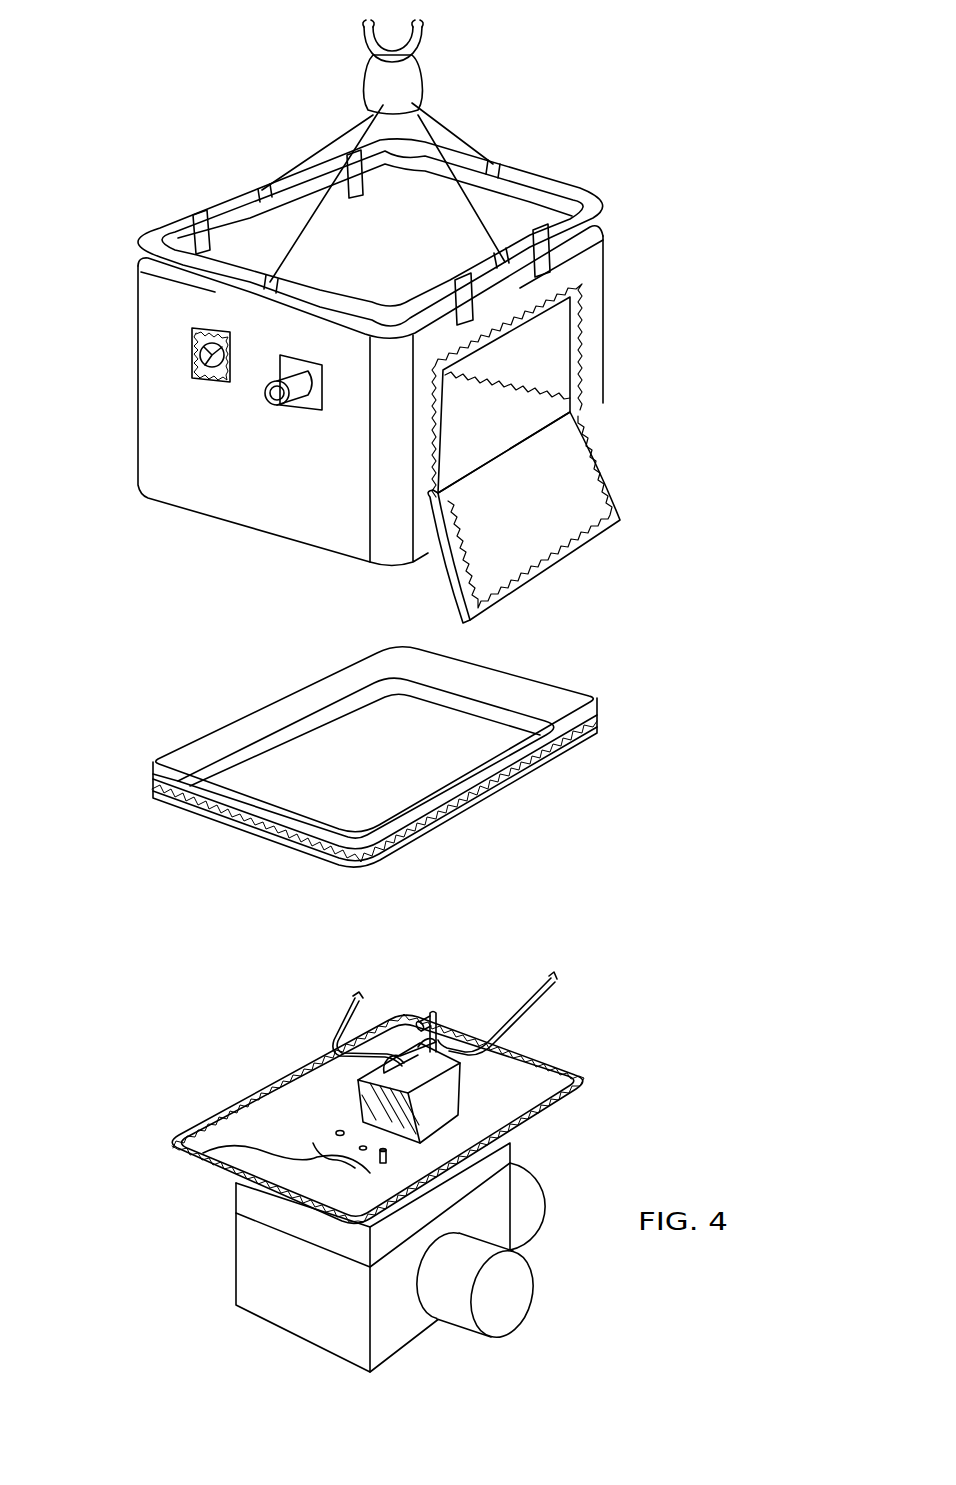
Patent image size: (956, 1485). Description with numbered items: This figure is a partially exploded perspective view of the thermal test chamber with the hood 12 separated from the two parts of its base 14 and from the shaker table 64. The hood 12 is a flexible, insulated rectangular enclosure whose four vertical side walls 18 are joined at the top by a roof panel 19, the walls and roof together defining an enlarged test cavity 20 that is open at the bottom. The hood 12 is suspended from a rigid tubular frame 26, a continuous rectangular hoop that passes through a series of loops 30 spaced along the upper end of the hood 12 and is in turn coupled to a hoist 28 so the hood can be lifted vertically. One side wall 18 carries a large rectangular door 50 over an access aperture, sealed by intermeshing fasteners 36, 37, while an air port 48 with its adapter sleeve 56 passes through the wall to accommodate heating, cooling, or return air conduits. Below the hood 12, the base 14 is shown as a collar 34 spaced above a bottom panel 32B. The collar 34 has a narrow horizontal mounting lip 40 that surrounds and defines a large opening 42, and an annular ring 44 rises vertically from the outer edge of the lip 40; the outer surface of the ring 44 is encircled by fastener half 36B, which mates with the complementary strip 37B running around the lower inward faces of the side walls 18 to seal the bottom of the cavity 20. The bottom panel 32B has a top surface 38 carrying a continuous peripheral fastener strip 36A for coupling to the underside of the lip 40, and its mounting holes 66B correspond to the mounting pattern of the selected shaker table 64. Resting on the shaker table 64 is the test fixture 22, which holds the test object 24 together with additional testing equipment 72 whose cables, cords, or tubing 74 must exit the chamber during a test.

The hood 12 is at (598, 257).
The two-piece base 14 is at (374, 773).
The side walls 18 is at (563, 327).
The roof panel 19 is at (360, 257).
The test cavity 20 is at (489, 362).
The test fixture 22 is at (453, 1130).
The test object 24 is at (462, 1066).
The tubular frame 26 is at (540, 178).
The hoist 28 is at (408, 87).
The loops 30 is at (457, 278).
The bottom panel 32B is at (237, 1160).
The collar 34 is at (400, 847).
The intermeshing fastener 36 is at (593, 460).
The fastener half on bottom panel 36A is at (590, 1077).
The fastener half on ring 36B is at (218, 808).
The intermeshing fastener 37 is at (585, 392).
The fastener half on side walls 37B is at (535, 388).
The top surface 38 is at (381, 1217).
The mounting lip 40 is at (243, 767).
The opening 42 is at (312, 766).
The ring 44 is at (347, 663).
The air port 48 is at (203, 360).
The door 50 is at (573, 523).
The adapter sleeve 56 is at (298, 398).
The shaker table 64 is at (517, 1293).
The mounting holes 66B is at (235, 1157).
The testing equipment 72 is at (432, 1013).
The cables, cords, or tubing 74 is at (347, 1017).